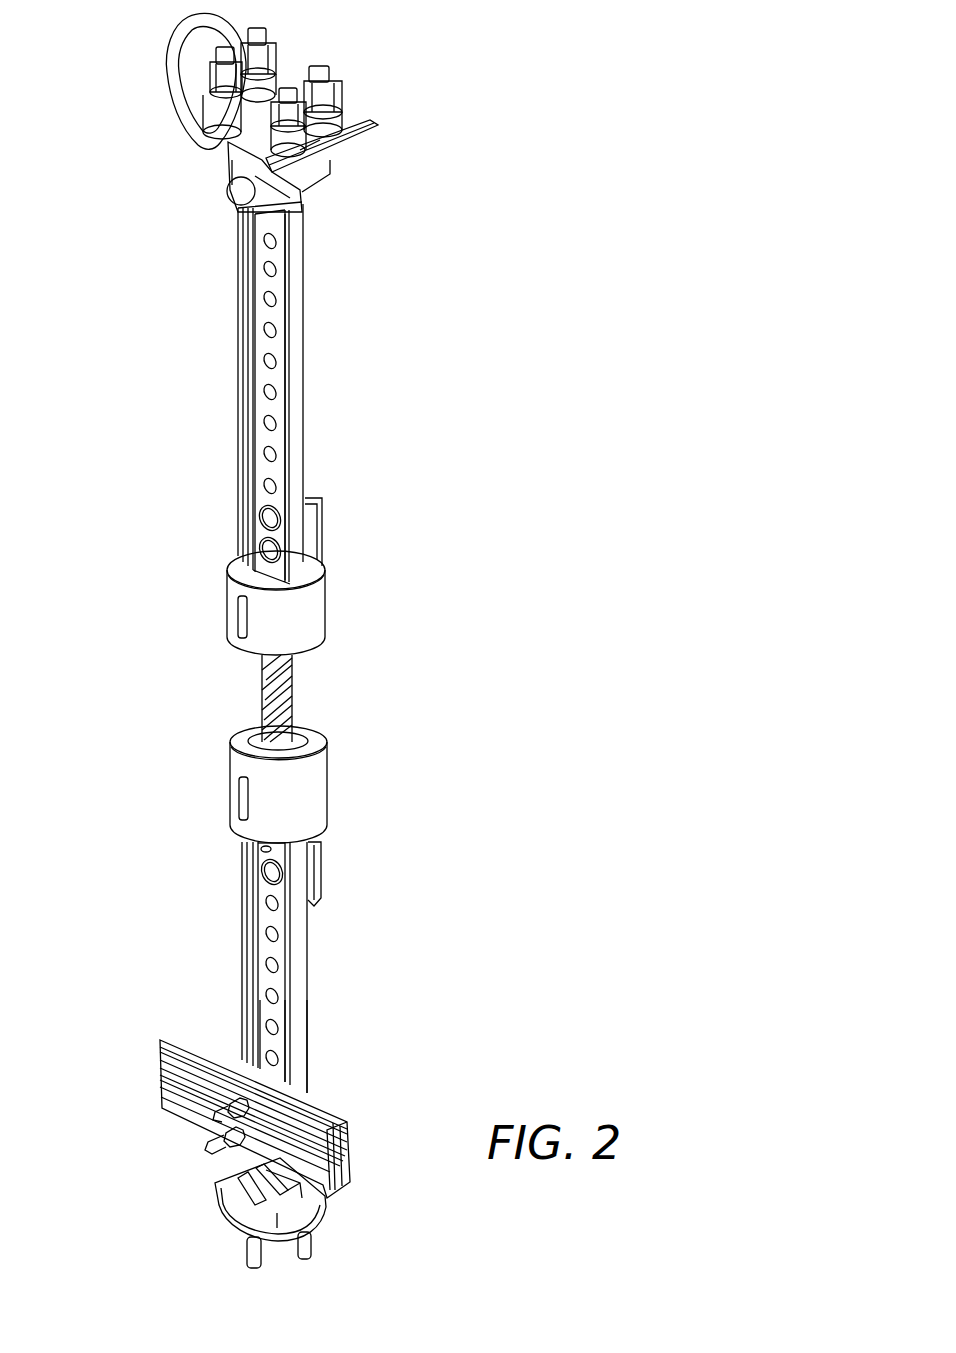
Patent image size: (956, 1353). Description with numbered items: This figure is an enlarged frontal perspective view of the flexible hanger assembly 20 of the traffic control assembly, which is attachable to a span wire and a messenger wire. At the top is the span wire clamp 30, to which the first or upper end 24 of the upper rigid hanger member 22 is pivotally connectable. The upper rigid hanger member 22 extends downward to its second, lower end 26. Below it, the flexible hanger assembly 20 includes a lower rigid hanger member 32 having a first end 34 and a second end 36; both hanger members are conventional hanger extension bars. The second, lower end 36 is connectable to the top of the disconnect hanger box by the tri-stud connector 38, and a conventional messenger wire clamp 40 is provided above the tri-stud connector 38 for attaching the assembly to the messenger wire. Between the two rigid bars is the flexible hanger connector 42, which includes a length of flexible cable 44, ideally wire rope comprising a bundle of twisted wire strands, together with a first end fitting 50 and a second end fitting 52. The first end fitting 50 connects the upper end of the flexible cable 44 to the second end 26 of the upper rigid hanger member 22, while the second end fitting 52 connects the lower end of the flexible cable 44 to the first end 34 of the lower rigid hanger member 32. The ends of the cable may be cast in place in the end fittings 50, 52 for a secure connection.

The flexible hanger assembly 20 is at (518, 357).
The upper rigid hanger member 22 is at (237, 343).
The first end of the upper rigid hanger member 24 is at (298, 248).
The second end of the upper rigid hanger member 26 is at (298, 566).
The span wire clamp 30 is at (372, 126).
The lower rigid hanger member 32 is at (243, 945).
The first end of the lower rigid hanger member 34 is at (302, 857).
The second end of the lower rigid hanger member 36 is at (302, 1091).
The tri-stud connector 38 is at (232, 1186).
The messenger wire clamp 40 is at (178, 1093).
The flexible hanger connector 42 is at (294, 696).
The flexible cable 44 is at (262, 693).
The first end fitting 50 is at (315, 611).
The second end fitting 52 is at (232, 796).